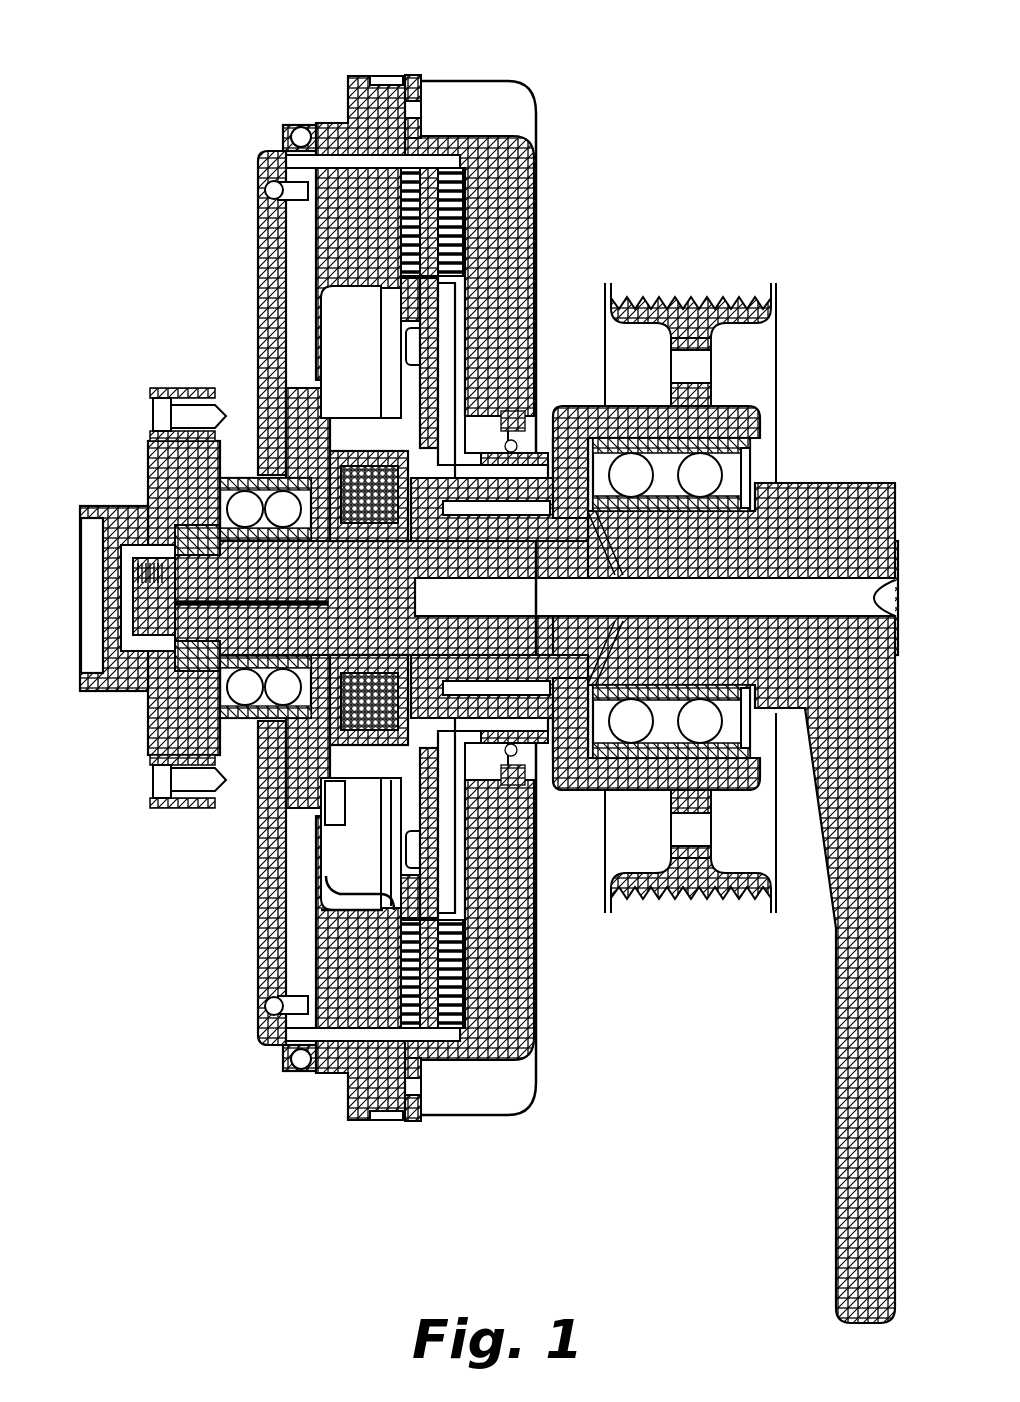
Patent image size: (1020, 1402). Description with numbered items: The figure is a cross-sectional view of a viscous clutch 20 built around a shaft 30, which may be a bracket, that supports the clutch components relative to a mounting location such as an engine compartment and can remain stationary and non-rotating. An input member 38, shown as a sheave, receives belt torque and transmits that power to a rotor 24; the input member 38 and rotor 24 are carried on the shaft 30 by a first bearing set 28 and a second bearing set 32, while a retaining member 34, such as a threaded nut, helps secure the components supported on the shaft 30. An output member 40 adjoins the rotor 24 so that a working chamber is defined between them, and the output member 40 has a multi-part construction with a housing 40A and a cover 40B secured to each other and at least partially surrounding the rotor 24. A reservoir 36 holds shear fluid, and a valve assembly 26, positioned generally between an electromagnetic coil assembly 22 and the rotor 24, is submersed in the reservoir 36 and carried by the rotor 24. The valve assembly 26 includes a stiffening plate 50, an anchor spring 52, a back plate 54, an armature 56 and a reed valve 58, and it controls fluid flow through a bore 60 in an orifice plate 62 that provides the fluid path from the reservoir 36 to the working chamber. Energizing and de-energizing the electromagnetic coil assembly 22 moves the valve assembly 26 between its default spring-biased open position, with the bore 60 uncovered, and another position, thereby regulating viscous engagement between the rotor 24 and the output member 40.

The viscous clutch 20 is at (779, 112).
The electromagnetic coil assembly 22 is at (330, 470).
The rotor 24 is at (455, 210).
The valve assembly 26 is at (393, 407).
The first bearing set 28 is at (630, 737).
The shaft 30 is at (803, 497).
The second bearing set 32 is at (216, 695).
The retaining member 34 is at (158, 505).
The reservoir 36 is at (330, 905).
The input member 38 is at (690, 288).
The output member 40 is at (333, 227).
The housing 40A is at (480, 150).
The cover 40B is at (340, 183).
The stiffening plate 50 is at (410, 333).
The anchor spring 52 is at (375, 318).
The back plate 54 is at (430, 372).
The armature 56 is at (407, 420).
The reed valve 58 is at (390, 845).
The bore 60 is at (390, 870).
The orifice plate 62 is at (390, 763).